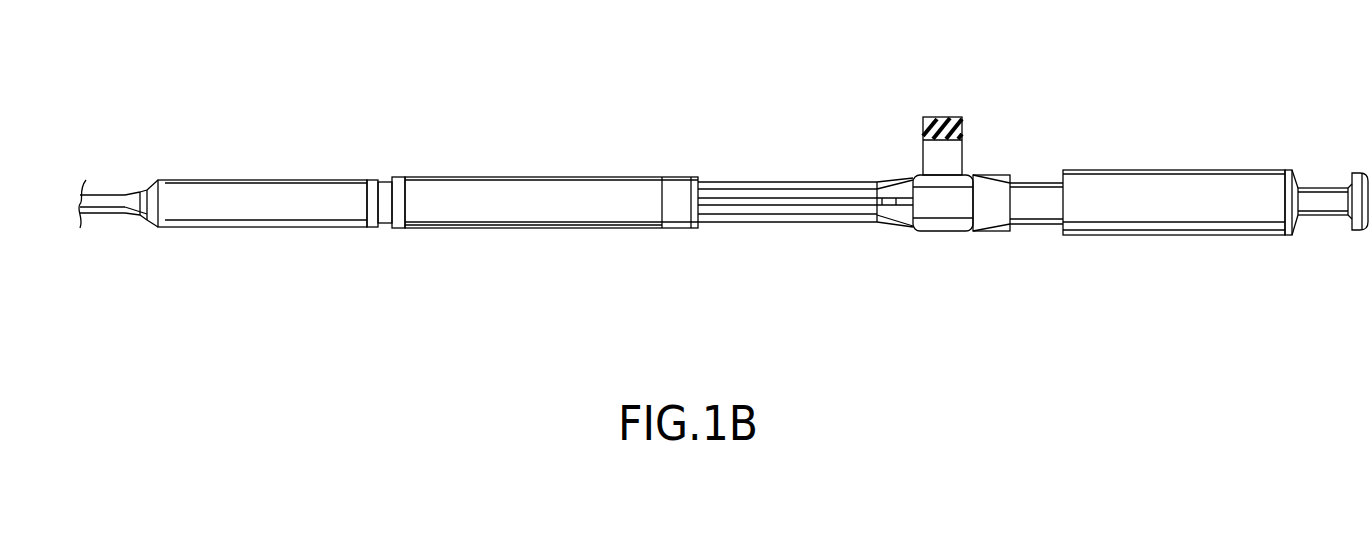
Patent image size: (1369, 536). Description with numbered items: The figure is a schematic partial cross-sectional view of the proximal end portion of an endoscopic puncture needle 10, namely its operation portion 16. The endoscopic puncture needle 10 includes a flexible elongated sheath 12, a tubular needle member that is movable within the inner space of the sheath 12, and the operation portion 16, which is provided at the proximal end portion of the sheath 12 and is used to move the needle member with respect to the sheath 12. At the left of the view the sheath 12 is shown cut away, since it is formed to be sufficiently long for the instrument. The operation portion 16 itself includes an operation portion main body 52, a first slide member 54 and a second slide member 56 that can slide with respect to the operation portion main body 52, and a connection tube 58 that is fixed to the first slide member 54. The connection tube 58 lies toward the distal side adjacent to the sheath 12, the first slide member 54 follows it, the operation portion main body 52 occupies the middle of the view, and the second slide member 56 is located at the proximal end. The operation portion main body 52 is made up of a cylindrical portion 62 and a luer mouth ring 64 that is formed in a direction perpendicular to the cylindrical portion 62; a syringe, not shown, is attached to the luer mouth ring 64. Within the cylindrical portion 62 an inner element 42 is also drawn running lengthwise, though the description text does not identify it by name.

The endoscopic puncture needle 10 is at (417, 282).
The sheath 12 is at (100, 235).
The operation portion 16 is at (690, 270).
The inner tube 42 is at (765, 202).
The operation portion main body 52 is at (750, 150).
The first slide member 54 is at (512, 138).
The second slide member 56 is at (1170, 140).
The connection tube 58 is at (248, 147).
The cylindrical portion 62 is at (823, 222).
The luer mouth ring 64 is at (947, 117).